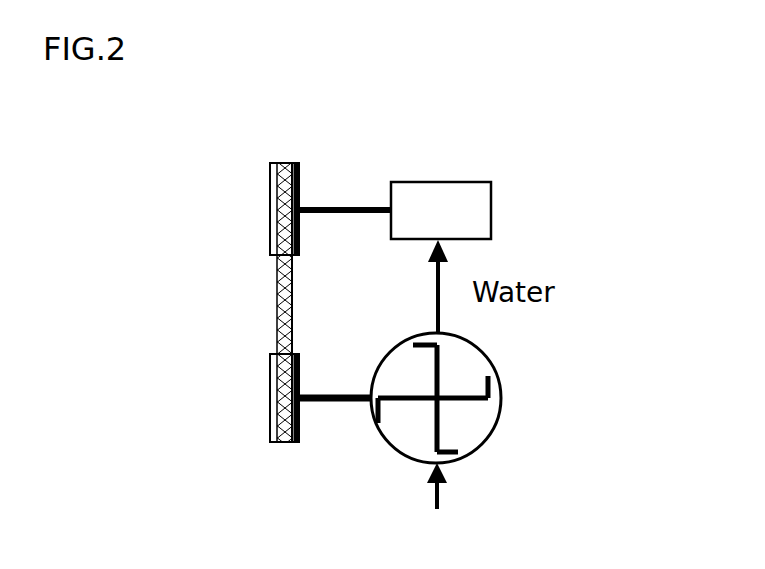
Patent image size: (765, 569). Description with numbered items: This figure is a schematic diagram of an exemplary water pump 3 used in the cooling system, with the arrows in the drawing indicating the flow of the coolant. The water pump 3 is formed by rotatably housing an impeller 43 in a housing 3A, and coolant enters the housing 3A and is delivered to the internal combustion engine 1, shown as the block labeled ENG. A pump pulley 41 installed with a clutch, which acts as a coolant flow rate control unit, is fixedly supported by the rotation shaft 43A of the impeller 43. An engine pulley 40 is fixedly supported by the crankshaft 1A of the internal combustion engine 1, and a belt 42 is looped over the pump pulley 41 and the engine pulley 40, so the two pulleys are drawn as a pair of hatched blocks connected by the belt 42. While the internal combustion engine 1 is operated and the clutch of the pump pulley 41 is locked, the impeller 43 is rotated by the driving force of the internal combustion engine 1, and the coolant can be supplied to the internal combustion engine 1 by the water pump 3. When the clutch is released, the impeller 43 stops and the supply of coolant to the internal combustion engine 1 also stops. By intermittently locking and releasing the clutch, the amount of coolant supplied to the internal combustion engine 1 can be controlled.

The internal combustion engine 1 is at (487, 205).
The crankshaft 1A is at (340, 206).
The water pump 3 is at (508, 343).
The housing 3A is at (498, 423).
The engine pulley 40 is at (271, 178).
The pump pulley 41 is at (269, 393).
The belt 42 is at (277, 308).
The impeller 43 is at (436, 433).
The rotation shaft 43A is at (338, 402).